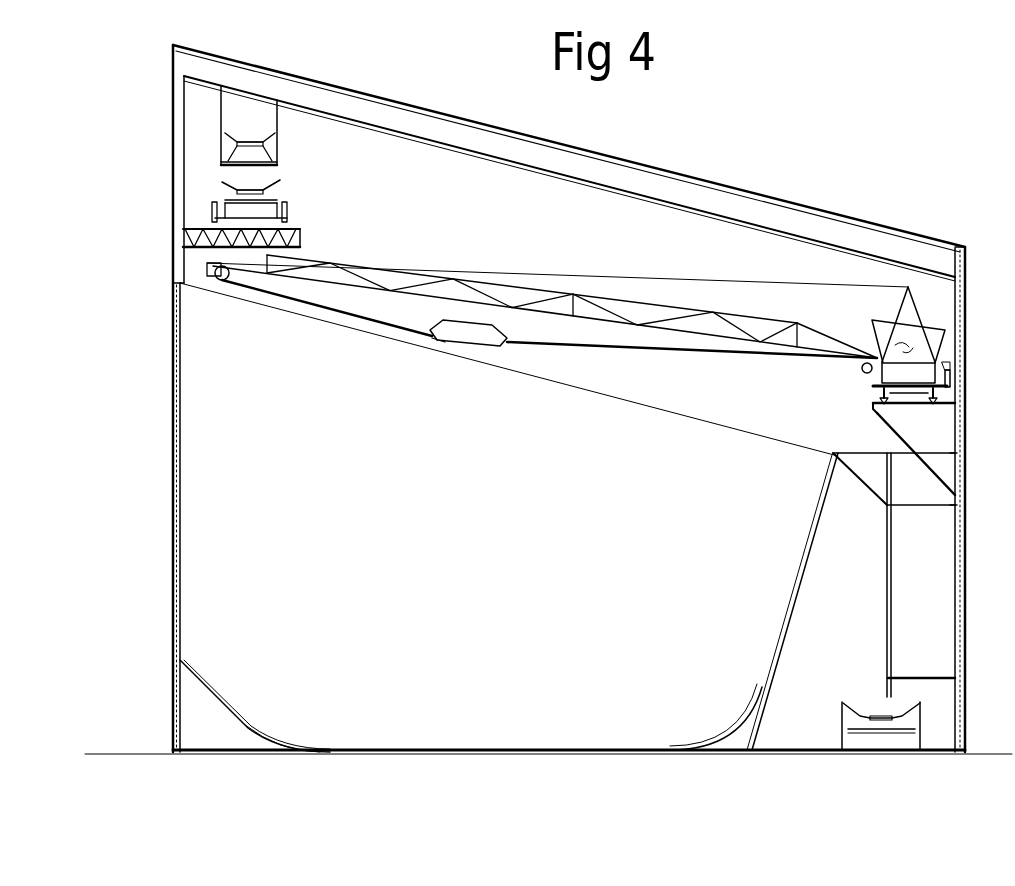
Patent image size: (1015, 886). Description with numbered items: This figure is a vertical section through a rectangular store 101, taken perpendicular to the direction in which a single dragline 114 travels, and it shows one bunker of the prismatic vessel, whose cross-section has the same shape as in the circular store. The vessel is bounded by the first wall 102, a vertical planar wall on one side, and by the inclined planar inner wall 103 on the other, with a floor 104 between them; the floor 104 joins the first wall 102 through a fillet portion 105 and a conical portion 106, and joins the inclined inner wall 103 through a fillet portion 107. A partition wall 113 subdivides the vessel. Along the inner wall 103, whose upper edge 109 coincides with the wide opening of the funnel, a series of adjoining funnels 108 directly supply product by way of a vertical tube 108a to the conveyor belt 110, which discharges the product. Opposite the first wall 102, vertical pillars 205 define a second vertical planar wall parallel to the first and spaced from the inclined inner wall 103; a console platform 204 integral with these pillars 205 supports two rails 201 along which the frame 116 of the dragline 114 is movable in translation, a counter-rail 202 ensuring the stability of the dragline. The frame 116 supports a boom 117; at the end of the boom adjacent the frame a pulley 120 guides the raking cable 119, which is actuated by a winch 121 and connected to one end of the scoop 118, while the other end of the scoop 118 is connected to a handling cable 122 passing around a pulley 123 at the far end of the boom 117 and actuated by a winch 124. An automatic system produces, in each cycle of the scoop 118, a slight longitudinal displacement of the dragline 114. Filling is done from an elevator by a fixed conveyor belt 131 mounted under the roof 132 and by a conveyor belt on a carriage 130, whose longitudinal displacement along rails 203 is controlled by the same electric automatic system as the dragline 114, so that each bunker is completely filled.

The rectangular store 101 is at (410, 212).
The first wall 102 is at (175, 516).
The inclined planar inner wall 103 is at (790, 602).
The floor 104 is at (442, 750).
The fillet portion 105 is at (272, 744).
The conical portion 106 is at (218, 698).
The fillet portion 107 is at (722, 737).
The funnel 108 is at (867, 482).
The vertical tube 108a is at (893, 628).
The upper edge 109 is at (833, 451).
The conveyor belt 110 is at (860, 702).
The partition wall 113 is at (680, 412).
The dragline 114 is at (957, 329).
The frame 116 is at (905, 392).
The boom 117 is at (558, 290).
The scoop 118 is at (448, 340).
The raking cable 119 is at (650, 348).
The pulley 120 is at (863, 373).
The winch 121 is at (940, 352).
The handling cable 122 is at (322, 306).
The pulley 123 is at (218, 284).
The winch 124 is at (890, 332).
The carriage 130 is at (282, 191).
The fixed conveyor belt 131 is at (280, 164).
The roof 132 is at (503, 140).
The rails 201 is at (872, 396).
The counter-rail 202 is at (950, 372).
The rails 203 is at (208, 223).
The console platform 204 is at (957, 457).
The vertical pillars 205 is at (958, 514).